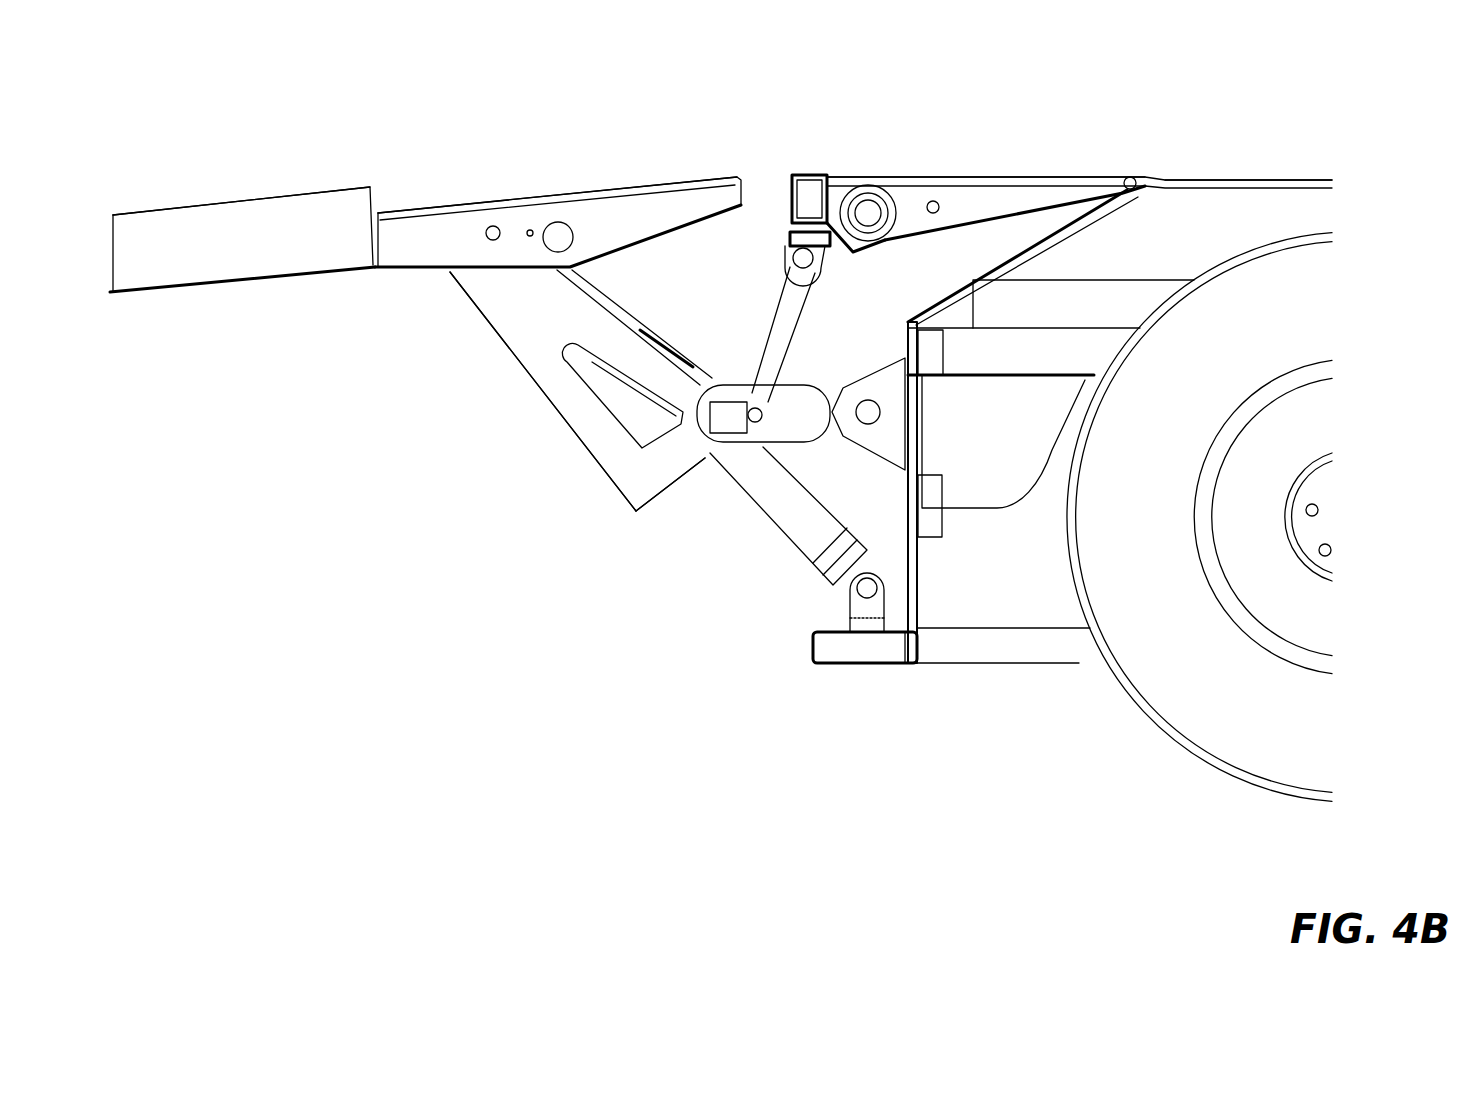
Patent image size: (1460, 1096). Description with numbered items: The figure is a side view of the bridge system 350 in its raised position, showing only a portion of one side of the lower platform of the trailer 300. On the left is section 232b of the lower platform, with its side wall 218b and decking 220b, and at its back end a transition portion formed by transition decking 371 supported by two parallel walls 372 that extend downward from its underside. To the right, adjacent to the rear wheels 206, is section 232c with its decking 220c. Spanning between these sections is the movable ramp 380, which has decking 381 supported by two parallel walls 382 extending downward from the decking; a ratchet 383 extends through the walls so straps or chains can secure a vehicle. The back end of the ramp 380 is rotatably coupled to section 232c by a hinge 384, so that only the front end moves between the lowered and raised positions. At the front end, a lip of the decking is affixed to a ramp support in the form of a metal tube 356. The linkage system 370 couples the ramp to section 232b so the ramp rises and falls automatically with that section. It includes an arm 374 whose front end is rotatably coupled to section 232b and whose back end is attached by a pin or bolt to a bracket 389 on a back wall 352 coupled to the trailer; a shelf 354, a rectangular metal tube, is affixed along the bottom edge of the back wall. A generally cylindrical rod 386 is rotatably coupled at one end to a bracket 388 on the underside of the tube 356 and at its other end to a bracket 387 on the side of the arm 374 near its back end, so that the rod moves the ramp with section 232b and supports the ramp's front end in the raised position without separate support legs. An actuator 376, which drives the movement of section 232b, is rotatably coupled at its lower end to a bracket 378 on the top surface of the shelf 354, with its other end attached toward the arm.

The trailer 300 is at (103, 49).
The decking 220b is at (230, 197).
The side wall 218b is at (242, 239).
The transition decking 371 is at (557, 161).
The walls 372 is at (558, 222).
The arm 374 is at (581, 390).
The linkage system 370 is at (489, 398).
The section 232b is at (148, 374).
The actuator 376 is at (779, 516).
The bracket 378 is at (797, 615).
The shelf 354 is at (865, 702).
The back wall 352 is at (1024, 533).
The bracket 389 is at (868, 431).
The bracket 387 is at (743, 355).
The rod 386 is at (818, 334).
The bracket 388 is at (780, 267).
The tube 356 is at (778, 160).
The ratchet 383 is at (850, 176).
The walls 382 is at (1079, 166).
The decking 381 is at (986, 123).
The ramp 380 is at (844, 117).
The hinge 384 is at (1045, 206).
The decking 220c is at (1139, 207).
The section 232c is at (1275, 107).
The rear wheels 206 is at (1199, 542).
The bridge system 350 is at (597, 579).